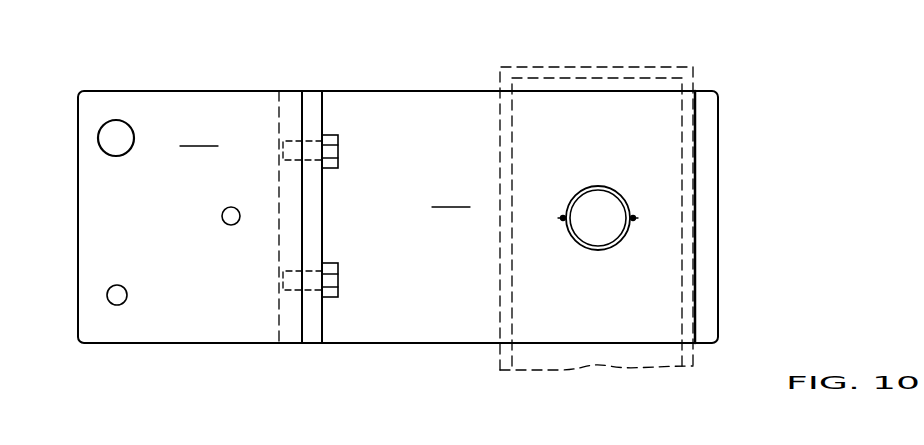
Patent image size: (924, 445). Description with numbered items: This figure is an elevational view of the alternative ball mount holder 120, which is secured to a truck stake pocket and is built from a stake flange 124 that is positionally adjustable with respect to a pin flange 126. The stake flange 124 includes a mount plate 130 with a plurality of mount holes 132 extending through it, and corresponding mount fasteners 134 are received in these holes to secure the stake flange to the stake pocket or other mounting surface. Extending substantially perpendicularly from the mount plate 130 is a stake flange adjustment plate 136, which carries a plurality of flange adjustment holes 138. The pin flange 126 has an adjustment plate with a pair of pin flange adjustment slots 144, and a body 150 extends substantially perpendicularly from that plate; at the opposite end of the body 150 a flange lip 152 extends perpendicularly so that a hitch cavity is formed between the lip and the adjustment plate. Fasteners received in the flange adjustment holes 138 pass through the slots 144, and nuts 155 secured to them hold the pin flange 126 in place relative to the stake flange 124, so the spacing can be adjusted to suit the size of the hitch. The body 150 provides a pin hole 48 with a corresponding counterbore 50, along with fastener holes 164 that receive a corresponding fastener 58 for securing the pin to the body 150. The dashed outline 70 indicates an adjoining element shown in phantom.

The stake flange 124 is at (170, 88).
The stake flange adjustment plate 136 is at (293, 90).
The pin flange 126 is at (374, 89).
The ball mount holder 120 is at (462, 65).
The bracket 70 is at (588, 67).
The flange lip 152 is at (702, 91).
The mount plate 130 is at (199, 136).
The body 150 is at (451, 197).
The mount fastener 134 is at (116, 156).
The mount hole 132 is at (122, 290).
The flange adjustment hole 138 is at (283, 163).
The pin flange adjustment slot 144 is at (312, 135).
The nut 155 is at (331, 167).
The pin hole 48 is at (599, 190).
The counterbore 50 is at (597, 248).
The fastener 58 is at (561, 218).
The fastener hole 164 is at (561, 221).